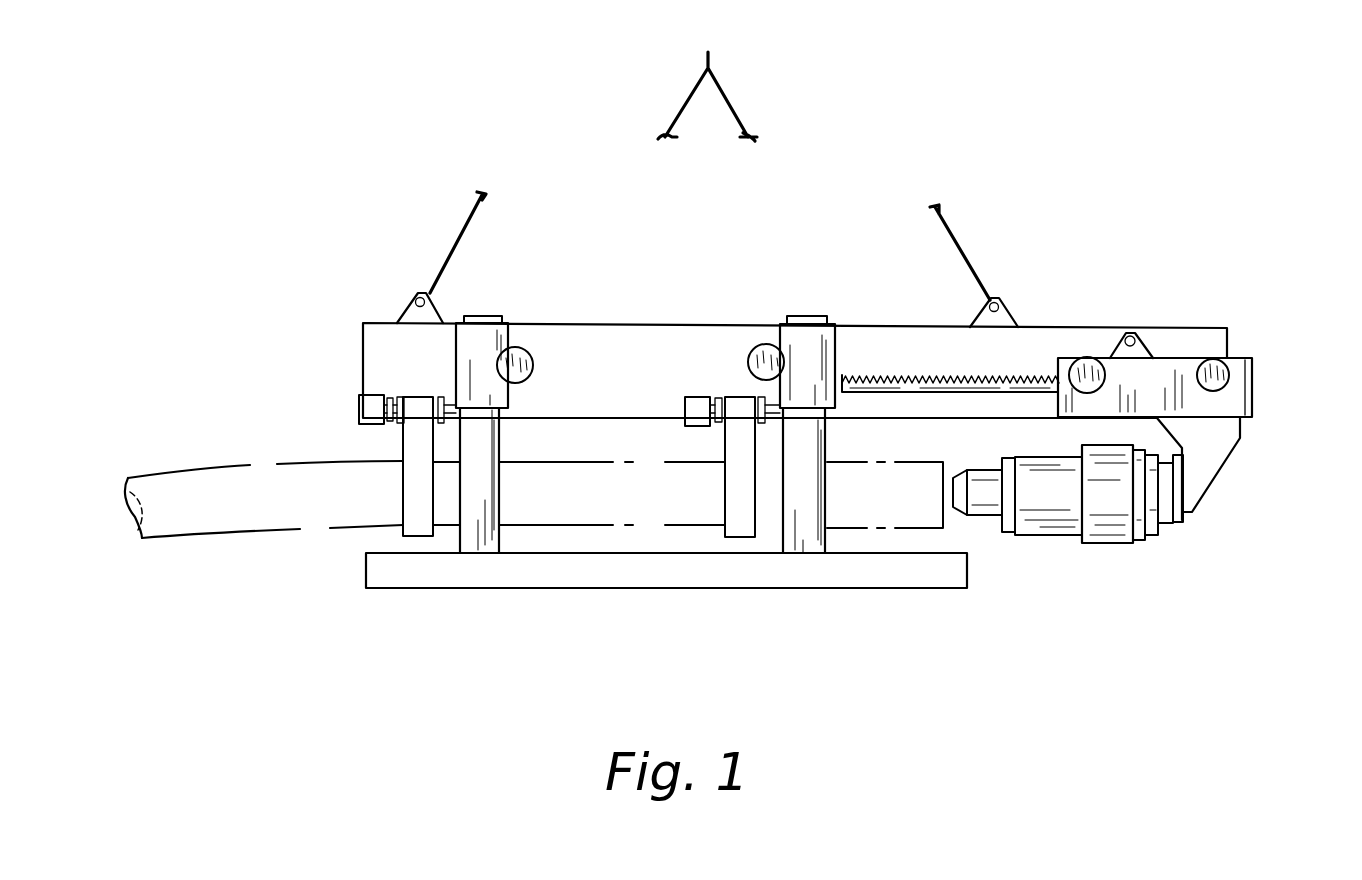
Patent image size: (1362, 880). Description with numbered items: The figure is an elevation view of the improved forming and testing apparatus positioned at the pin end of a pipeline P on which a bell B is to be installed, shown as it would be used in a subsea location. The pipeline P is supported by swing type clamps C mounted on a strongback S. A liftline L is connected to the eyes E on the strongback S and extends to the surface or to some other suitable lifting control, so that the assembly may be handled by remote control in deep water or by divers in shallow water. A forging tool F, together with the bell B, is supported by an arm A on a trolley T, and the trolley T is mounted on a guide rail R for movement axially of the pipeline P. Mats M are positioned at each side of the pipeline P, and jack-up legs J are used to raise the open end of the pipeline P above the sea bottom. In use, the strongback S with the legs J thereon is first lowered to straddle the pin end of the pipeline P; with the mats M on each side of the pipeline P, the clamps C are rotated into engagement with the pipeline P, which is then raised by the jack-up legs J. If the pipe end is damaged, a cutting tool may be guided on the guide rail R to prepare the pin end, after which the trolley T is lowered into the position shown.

The liftline L is at (718, 80).
The eyes E is at (403, 302).
The strongback S is at (658, 325).
The guide rail R is at (992, 376).
The trolley T is at (1253, 385).
The swing type clamps C is at (403, 450).
The jack-up legs J is at (507, 472).
The pipeline P is at (292, 527).
The mats M is at (662, 588).
The forging tool F is at (975, 520).
The bell B is at (1040, 535).
The arm A is at (1222, 468).